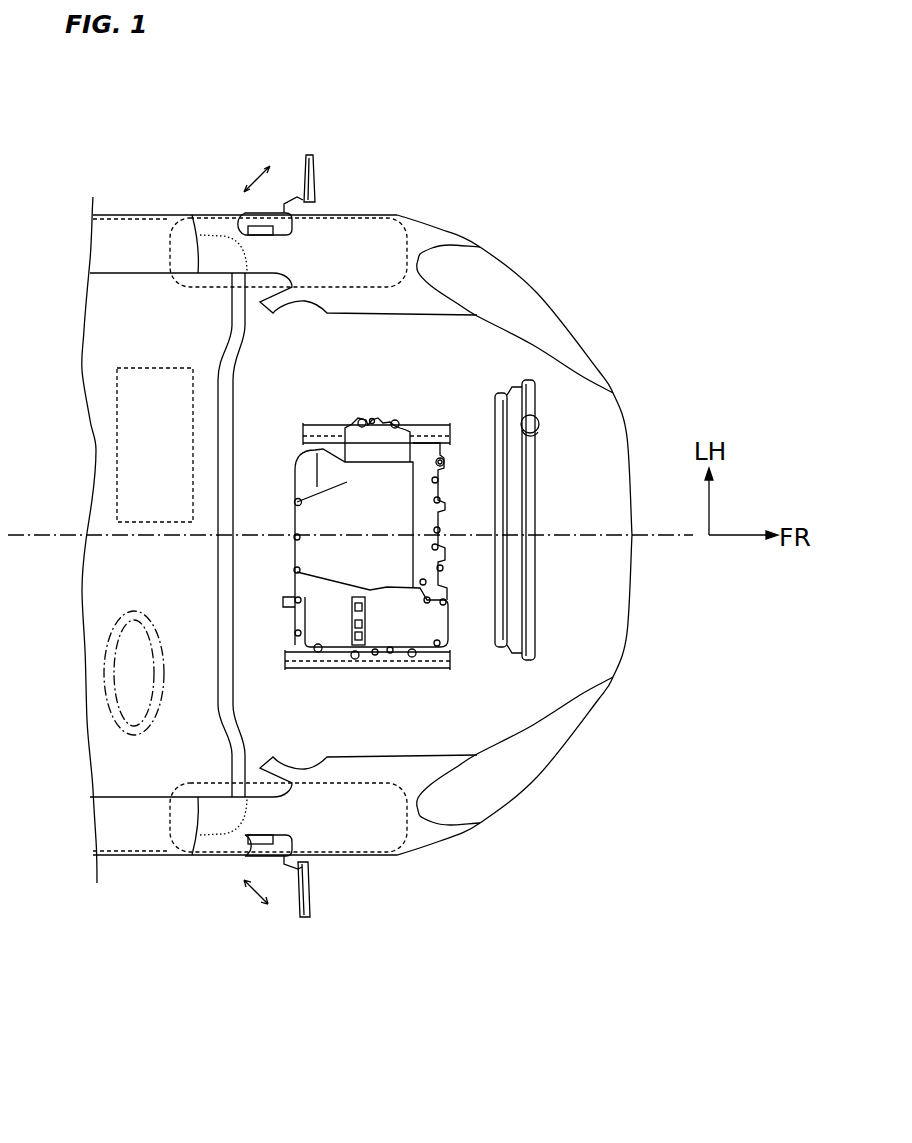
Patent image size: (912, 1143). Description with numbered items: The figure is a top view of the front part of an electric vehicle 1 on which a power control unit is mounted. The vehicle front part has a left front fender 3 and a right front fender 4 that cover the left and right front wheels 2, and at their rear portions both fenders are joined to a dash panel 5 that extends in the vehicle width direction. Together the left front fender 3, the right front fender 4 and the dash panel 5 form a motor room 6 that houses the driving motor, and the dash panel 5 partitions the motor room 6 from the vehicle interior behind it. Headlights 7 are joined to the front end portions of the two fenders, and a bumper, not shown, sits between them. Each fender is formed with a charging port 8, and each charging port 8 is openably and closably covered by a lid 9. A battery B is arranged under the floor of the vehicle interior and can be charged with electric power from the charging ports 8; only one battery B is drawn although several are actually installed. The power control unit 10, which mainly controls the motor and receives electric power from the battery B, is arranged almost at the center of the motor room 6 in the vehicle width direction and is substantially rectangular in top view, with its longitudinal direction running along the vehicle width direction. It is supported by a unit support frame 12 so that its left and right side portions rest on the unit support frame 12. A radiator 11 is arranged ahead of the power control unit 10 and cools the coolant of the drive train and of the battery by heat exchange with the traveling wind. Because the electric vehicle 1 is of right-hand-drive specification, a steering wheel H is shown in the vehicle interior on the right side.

The electric vehicle 1 is at (616, 92).
The front wheel 2 is at (412, 238).
The left front fender 3 is at (363, 213).
The right front fender 4 is at (360, 857).
The dash panel 5 is at (227, 580).
The motor room 6 is at (342, 364).
The headlight 7 is at (535, 295).
The charging port 8 is at (236, 218).
The lid 9 is at (312, 153).
The power control unit 10 is at (451, 639).
The radiator 11 is at (537, 468).
The unit support frame 12 is at (428, 430).
The battery B is at (115, 447).
The steering wheel H is at (105, 688).